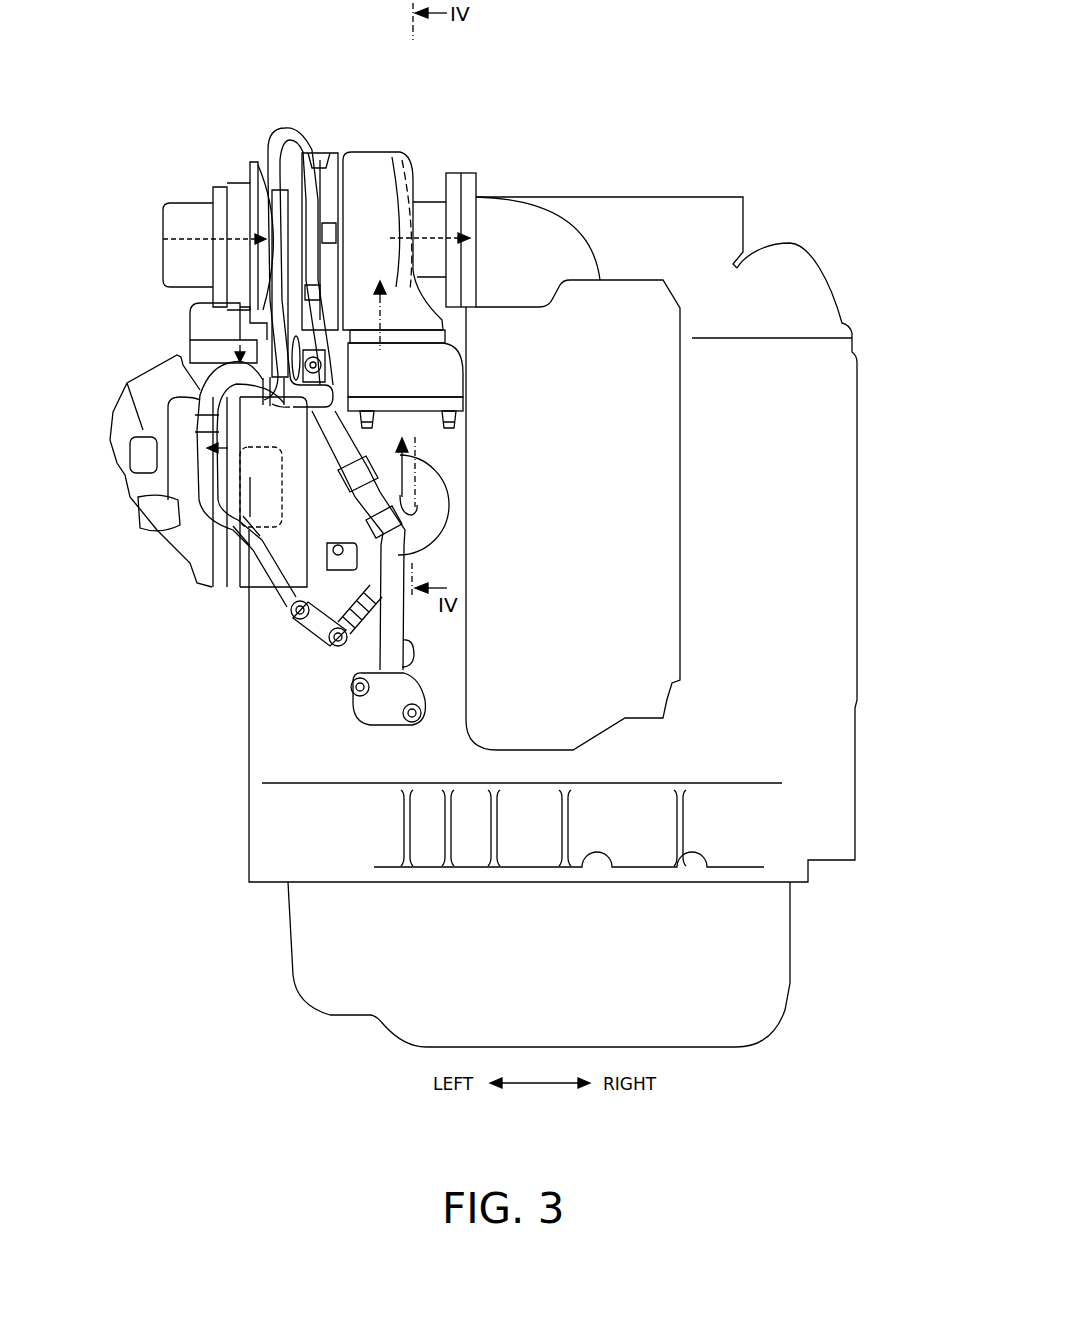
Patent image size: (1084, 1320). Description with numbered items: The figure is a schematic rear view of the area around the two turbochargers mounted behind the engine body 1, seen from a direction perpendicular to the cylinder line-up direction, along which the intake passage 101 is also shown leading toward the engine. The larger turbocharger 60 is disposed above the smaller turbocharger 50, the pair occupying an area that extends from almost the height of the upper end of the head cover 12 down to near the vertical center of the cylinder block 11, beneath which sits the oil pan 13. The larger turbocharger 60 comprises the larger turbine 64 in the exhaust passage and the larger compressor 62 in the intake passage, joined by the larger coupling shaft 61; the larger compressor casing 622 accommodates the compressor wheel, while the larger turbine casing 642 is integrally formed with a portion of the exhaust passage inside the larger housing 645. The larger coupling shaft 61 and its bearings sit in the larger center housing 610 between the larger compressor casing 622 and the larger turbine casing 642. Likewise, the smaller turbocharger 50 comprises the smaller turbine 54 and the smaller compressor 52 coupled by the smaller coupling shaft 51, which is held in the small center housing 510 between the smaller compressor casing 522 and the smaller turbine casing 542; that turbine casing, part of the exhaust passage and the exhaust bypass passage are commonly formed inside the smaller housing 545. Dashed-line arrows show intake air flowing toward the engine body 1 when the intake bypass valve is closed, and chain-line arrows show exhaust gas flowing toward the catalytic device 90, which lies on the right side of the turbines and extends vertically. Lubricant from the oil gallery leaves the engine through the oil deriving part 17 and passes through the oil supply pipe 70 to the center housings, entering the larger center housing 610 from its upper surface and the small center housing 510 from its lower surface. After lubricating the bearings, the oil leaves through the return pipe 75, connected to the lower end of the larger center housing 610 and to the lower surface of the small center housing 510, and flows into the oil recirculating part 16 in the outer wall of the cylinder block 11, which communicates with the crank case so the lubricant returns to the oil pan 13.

The engine body 1 is at (745, 176).
The cylinder block 11 is at (820, 432).
The head cover 12 is at (808, 276).
The oil pan 13 is at (773, 921).
The oil recirculating part 16 is at (367, 722).
The oil deriving part 17 is at (303, 642).
The smaller turbocharger 50 is at (444, 553).
The smaller coupling shaft 51 is at (432, 458).
The small center housing 510 is at (486, 476).
The smaller compressor 52 is at (200, 572).
The smaller compressor casing 522 is at (202, 498).
The smaller turbine 54 is at (433, 483).
The smaller turbine casing 542 is at (423, 505).
The smaller housing 545 is at (510, 505).
The larger turbocharger 60 is at (175, 170).
The larger coupling shaft 61 is at (322, 202).
The larger center housing 610 is at (326, 211).
The larger compressor 62 is at (270, 165).
The larger compressor casing 622 is at (237, 210).
The larger turbine 64 is at (386, 167).
The larger turbine casing 642 is at (403, 290).
The larger housing 645 is at (413, 252).
The oil supply pipe 70 is at (290, 132).
The return pipe 75 is at (393, 610).
The catalytic device 90 is at (665, 392).
The intake passage 101 is at (590, 160).